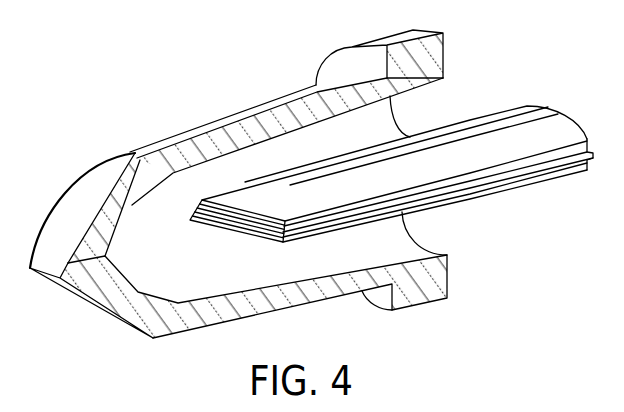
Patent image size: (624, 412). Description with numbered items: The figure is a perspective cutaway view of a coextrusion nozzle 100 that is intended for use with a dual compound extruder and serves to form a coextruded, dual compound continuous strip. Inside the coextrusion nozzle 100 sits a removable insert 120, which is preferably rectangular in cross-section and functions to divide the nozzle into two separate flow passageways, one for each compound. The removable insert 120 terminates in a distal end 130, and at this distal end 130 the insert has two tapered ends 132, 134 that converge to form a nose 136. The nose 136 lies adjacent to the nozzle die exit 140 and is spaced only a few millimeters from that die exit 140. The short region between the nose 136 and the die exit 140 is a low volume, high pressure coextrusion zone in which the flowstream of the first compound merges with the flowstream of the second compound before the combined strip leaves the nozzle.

The coextrusion nozzle 100 is at (113, 105).
The removable insert 120 is at (354, 161).
The distal end 130 is at (193, 227).
The tapered end 132 is at (258, 204).
The tapered end 134 is at (262, 240).
The nose 136 is at (232, 231).
The die exit 140 is at (70, 262).